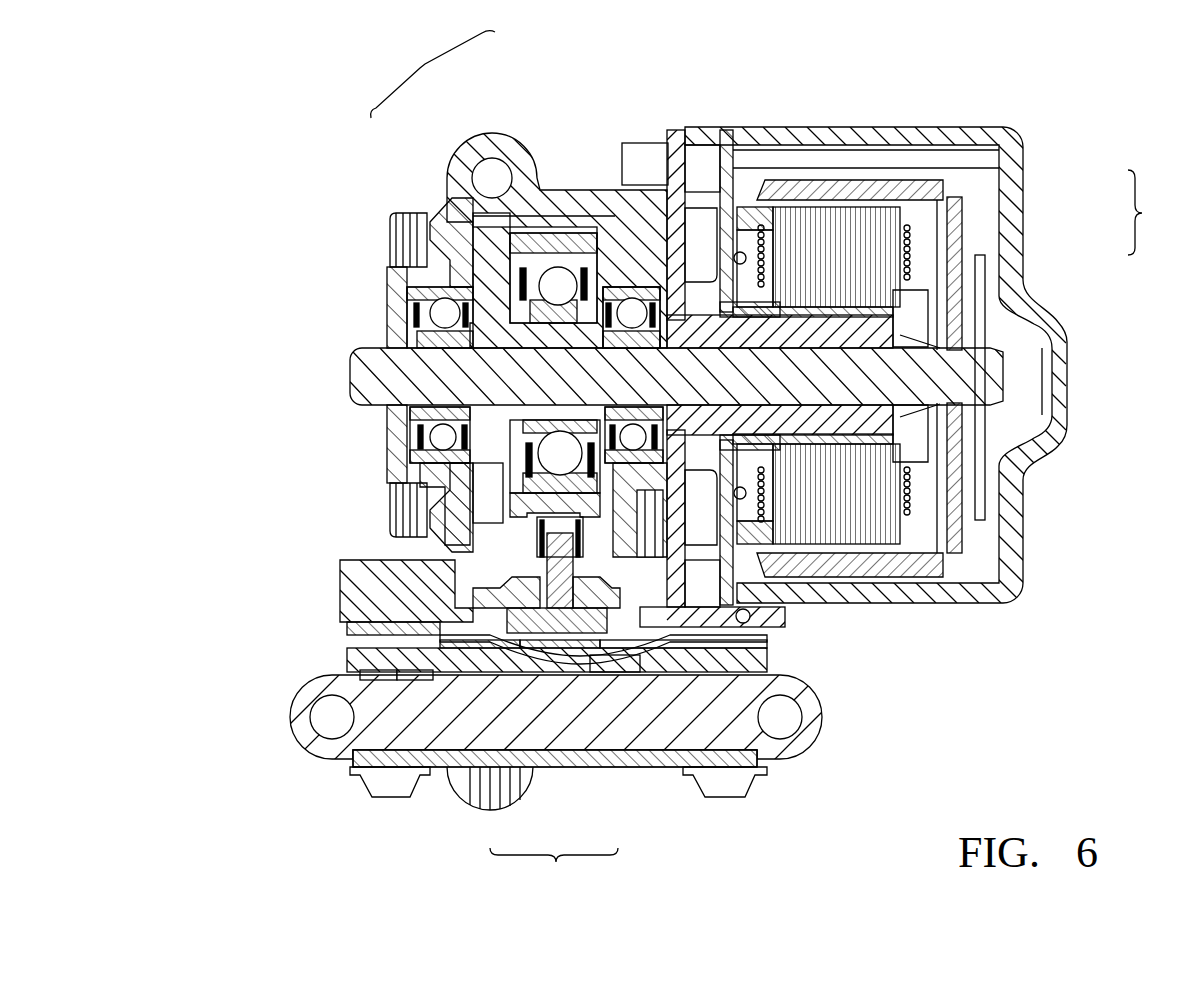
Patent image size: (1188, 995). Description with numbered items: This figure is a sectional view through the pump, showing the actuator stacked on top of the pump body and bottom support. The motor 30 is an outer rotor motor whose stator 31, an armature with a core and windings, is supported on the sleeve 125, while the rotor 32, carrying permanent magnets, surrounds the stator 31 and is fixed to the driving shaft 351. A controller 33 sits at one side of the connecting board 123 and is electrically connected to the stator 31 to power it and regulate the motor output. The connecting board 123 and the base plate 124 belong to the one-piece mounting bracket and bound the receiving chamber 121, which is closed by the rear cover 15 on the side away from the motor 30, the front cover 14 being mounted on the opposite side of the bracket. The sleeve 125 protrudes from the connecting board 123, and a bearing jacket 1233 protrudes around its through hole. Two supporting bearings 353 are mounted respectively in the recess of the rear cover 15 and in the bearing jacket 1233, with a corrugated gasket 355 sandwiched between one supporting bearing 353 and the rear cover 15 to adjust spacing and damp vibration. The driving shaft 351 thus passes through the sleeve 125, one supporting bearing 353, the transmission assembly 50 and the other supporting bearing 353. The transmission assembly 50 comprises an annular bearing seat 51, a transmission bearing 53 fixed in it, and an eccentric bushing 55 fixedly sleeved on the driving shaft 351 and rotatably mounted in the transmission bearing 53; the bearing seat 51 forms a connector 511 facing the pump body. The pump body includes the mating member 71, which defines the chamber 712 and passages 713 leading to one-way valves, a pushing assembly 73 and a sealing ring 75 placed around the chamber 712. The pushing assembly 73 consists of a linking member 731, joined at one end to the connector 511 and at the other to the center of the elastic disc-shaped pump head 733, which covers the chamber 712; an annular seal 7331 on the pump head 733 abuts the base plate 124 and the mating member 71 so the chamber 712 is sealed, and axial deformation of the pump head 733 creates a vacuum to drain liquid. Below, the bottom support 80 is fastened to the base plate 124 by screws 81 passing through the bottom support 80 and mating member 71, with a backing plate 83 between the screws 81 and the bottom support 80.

The front cover 14 is at (960, 145).
The rear cover 15 is at (427, 200).
The motor 30 is at (1153, 212).
The stator 31 is at (885, 256).
The rotor 32 is at (974, 202).
The controller 33 is at (728, 158).
The transmission assembly 50 is at (433, 74).
The bearing seat 51 is at (497, 330).
The transmission bearing 53 is at (565, 253).
The eccentric bushing 55 is at (455, 195).
The mating member 71 is at (767, 662).
The pushing assembly 73 is at (554, 873).
The sealing ring 75 is at (400, 630).
The bottom support 80 is at (307, 735).
The screws 81 is at (385, 795).
The backing plate 83 is at (470, 770).
The receiving chamber 121 is at (480, 500).
The connecting board 123 is at (683, 143).
The base plate 124 is at (360, 595).
The sleeve 125 is at (905, 338).
The driving shaft 351 is at (377, 360).
The supporting bearings 353 is at (625, 257).
The gasket 355 is at (413, 440).
The connector 511 is at (520, 573).
The chamber 712 is at (613, 668).
The passages 713 is at (767, 643).
The linking member 731 is at (560, 648).
The pump head 733 is at (503, 648).
The bearing jacket 1233 is at (700, 627).
The annular seal 7331 is at (345, 663).